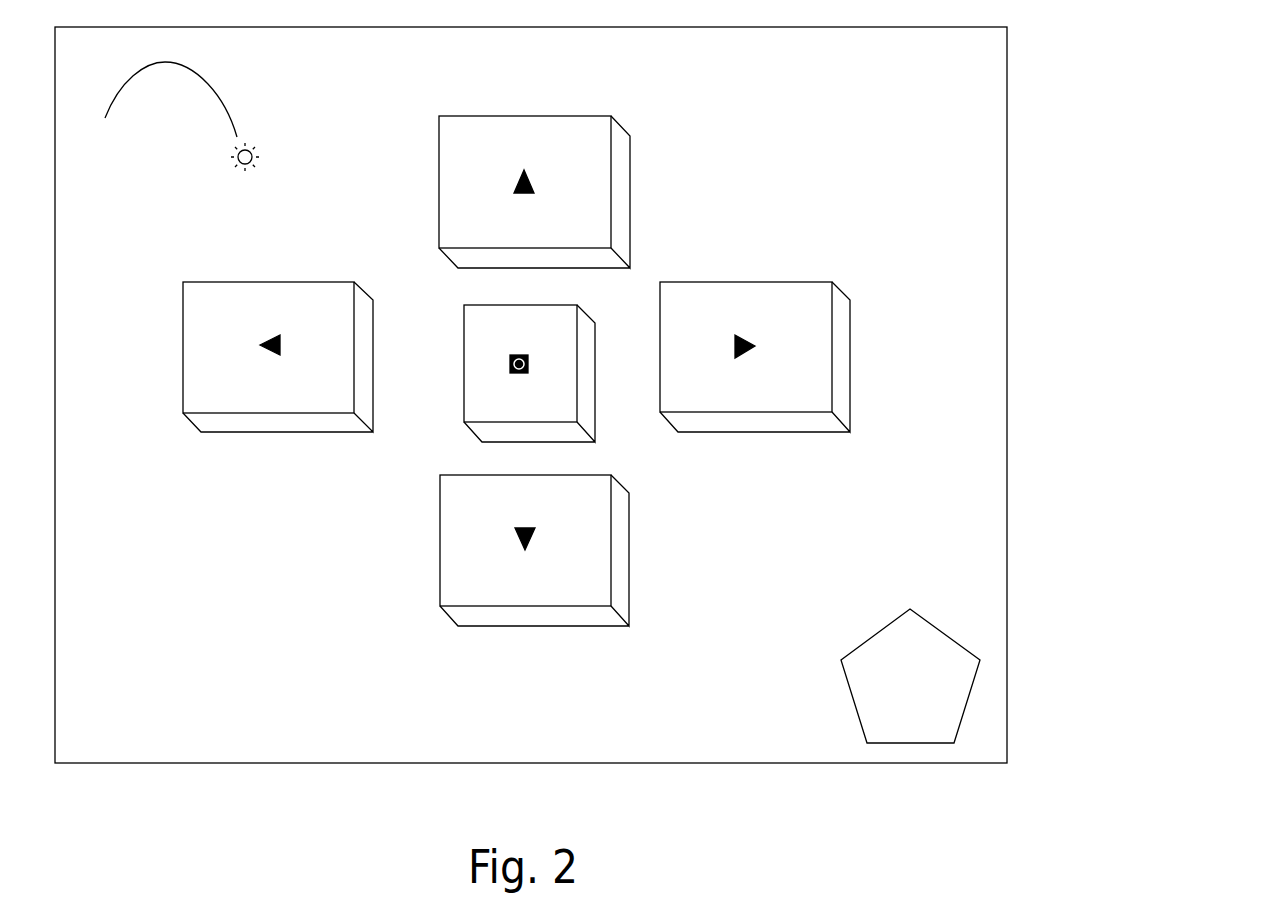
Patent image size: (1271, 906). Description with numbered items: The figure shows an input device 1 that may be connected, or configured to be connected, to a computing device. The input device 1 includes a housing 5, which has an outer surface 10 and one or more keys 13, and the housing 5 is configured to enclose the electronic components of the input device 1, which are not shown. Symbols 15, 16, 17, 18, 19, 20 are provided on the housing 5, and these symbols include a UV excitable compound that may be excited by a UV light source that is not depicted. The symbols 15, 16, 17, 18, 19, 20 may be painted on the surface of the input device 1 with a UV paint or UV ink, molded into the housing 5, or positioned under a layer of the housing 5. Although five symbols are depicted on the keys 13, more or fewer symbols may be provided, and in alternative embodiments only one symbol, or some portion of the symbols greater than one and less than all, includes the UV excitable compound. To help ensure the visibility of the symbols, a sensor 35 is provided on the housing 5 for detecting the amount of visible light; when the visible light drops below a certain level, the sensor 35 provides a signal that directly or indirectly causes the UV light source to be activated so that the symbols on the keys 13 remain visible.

The input device 1 is at (645, 439).
The housing 5 is at (527, 87).
The outer surface 10 is at (260, 734).
The keys 13 is at (460, 472).
The symbol 15 is at (272, 355).
The symbol 16 is at (510, 538).
The symbol 17 is at (745, 335).
The symbol 18 is at (537, 180).
The symbol 19 is at (538, 376).
The symbol 20 is at (176, 123).
The sensor 35 is at (893, 693).